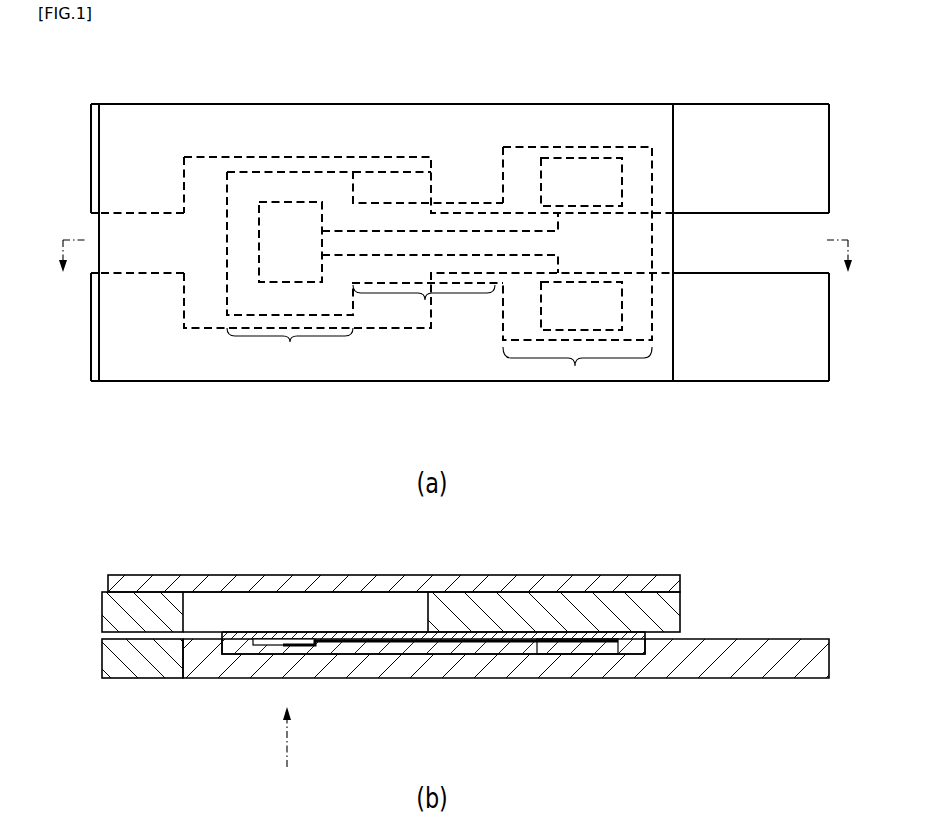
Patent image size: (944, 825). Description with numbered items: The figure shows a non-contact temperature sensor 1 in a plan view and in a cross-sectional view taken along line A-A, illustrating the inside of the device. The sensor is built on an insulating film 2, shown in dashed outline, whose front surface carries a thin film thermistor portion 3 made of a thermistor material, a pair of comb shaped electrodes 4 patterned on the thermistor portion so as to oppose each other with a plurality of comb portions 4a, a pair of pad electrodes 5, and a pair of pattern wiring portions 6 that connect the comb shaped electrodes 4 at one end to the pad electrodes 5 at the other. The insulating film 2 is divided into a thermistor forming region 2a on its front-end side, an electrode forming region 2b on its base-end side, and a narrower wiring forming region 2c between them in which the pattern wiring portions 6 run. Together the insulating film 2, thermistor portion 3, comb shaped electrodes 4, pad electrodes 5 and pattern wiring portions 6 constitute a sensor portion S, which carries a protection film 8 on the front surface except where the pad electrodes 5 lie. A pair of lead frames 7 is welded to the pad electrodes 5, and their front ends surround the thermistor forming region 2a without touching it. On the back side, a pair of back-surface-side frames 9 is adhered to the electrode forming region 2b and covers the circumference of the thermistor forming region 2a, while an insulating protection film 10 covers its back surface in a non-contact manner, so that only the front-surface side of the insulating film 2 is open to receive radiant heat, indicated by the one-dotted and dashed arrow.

The non-contact temperature sensor 1 is at (456, 400).
The insulating film 2 is at (414, 393).
The thermistor forming region 2a is at (290, 388).
The electrode forming region 2b is at (577, 406).
The wiring forming region 2c is at (424, 356).
The thin film thermistor portion 3 is at (286, 393).
The comb shaped electrodes 4 is at (450, 690).
The comb portions 4a is at (450, 690).
The pad electrodes 5 is at (579, 403).
The pattern wiring portions 6 is at (433, 401).
The lead frames 7 is at (506, 398).
The protection film 8 is at (429, 692).
The back-surface-side frames 9 is at (555, 368).
The insulating protection film 10 is at (385, 391).
The sensor portion S is at (354, 343).